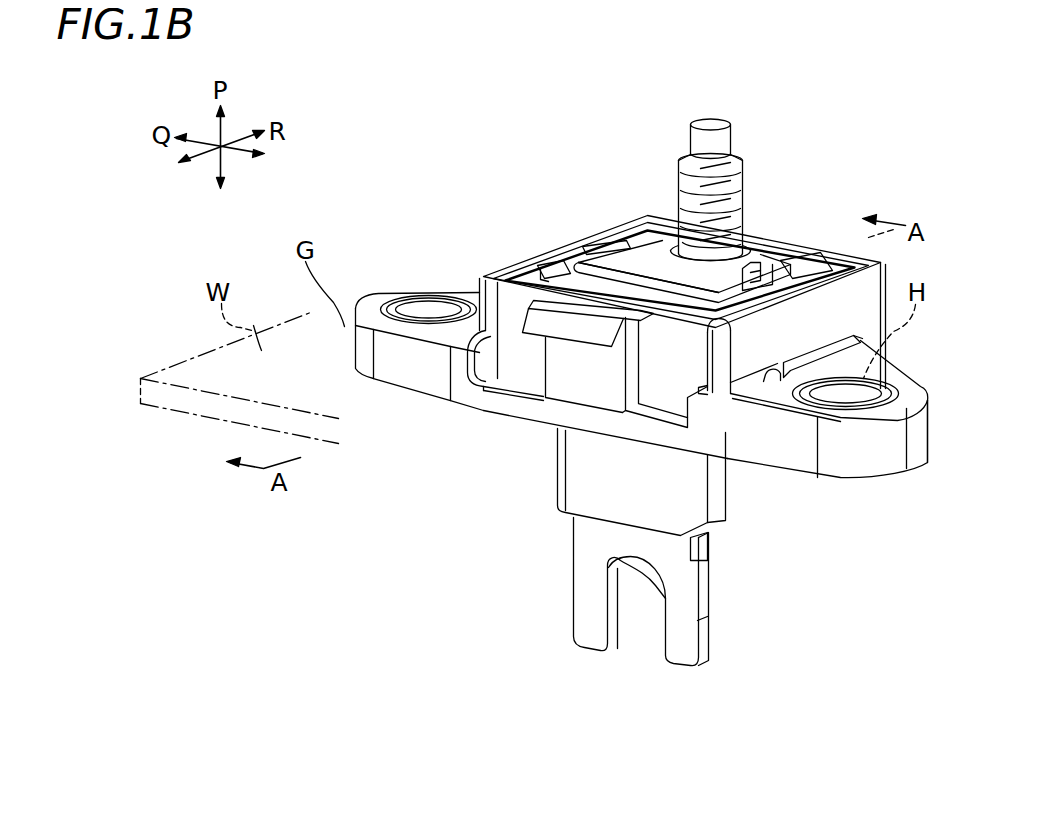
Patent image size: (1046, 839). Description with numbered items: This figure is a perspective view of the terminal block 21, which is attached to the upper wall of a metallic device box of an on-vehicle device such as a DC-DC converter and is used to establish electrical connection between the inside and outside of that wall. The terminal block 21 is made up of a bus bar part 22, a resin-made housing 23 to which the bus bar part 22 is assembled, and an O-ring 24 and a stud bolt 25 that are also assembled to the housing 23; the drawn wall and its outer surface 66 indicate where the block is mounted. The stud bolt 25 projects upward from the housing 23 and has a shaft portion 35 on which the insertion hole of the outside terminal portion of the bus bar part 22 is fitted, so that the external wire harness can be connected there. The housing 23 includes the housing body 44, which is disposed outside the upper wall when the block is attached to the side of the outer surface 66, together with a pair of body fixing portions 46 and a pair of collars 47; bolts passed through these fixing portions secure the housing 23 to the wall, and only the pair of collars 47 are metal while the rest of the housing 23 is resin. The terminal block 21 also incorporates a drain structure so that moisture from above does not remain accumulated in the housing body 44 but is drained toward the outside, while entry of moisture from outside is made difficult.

The terminal block 21 is at (502, 198).
The bus bar part 22 is at (650, 258).
The housing 23 is at (581, 397).
The O-ring 24 is at (763, 452).
The stud bolt 25 is at (722, 140).
The shaft portion 35 is at (718, 181).
The housing body 44 is at (527, 367).
The body fixing portions 46 is at (381, 300).
The collars 47 is at (438, 294).
The outer surface 66 is at (208, 368).